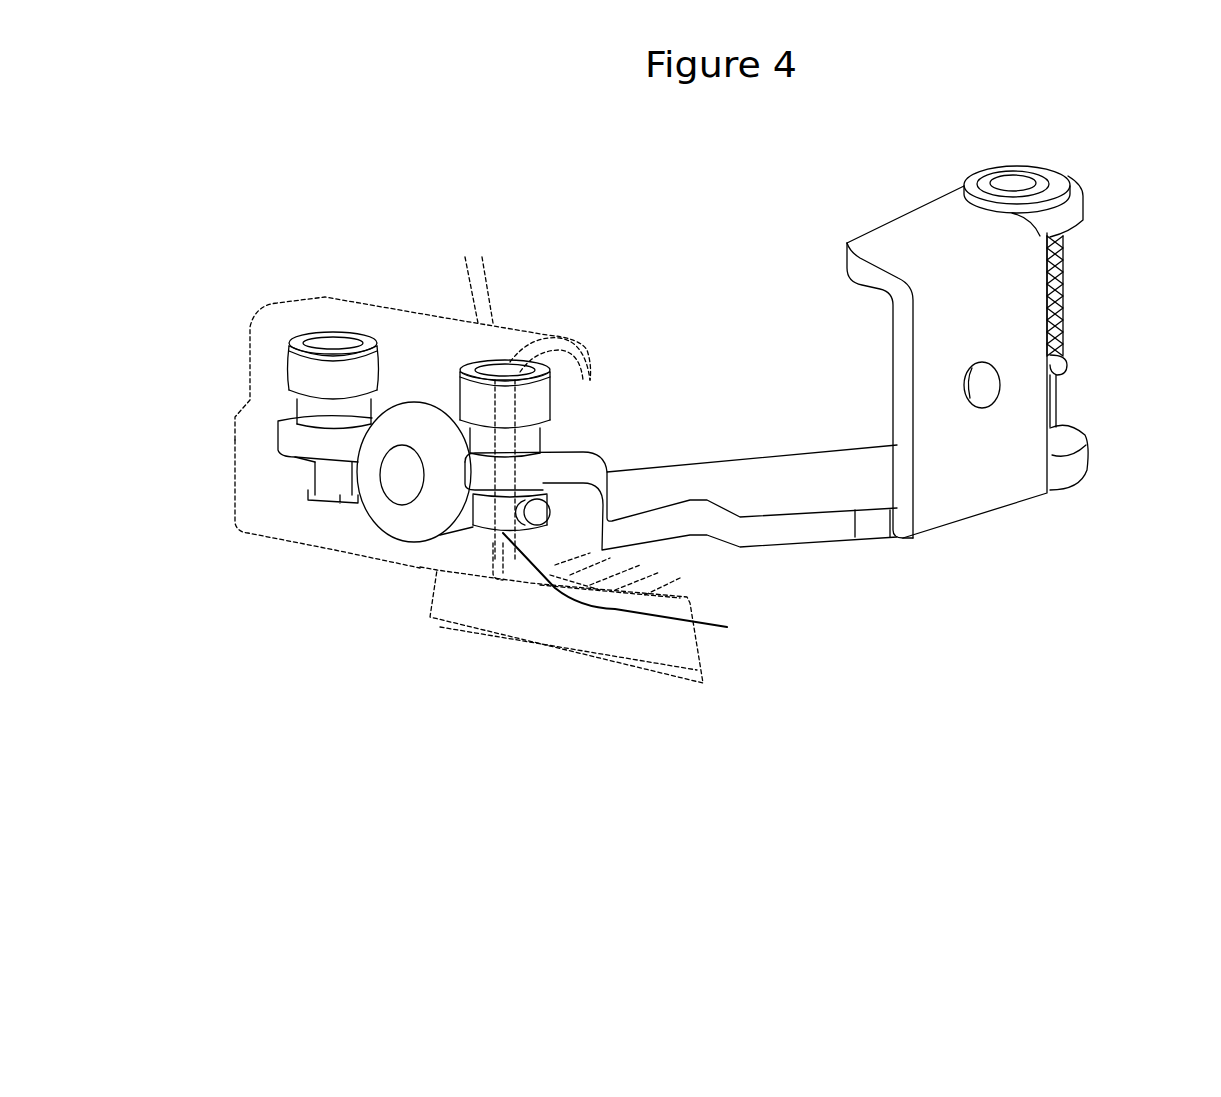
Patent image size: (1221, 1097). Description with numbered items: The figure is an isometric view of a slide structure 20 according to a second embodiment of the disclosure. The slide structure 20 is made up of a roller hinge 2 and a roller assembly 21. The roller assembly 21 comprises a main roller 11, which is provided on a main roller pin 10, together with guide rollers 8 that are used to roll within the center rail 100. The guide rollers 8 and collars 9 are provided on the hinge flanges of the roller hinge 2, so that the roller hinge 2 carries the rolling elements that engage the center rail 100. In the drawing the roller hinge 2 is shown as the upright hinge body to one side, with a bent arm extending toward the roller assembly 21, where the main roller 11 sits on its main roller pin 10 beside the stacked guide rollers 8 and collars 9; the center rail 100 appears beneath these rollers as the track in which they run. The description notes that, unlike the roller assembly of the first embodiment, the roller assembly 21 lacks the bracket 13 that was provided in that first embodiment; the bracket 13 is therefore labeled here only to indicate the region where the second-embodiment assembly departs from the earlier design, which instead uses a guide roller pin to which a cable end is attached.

The roller hinge 2 is at (997, 477).
The guide rollers 8 is at (540, 400).
The collars 9 is at (527, 443).
The main roller pin 10 is at (390, 500).
The main roller 11 is at (417, 520).
The bracket 13 is at (587, 473).
The slide structure 20 is at (833, 564).
The roller assembly 21 is at (213, 410).
The center rail 100 is at (700, 677).